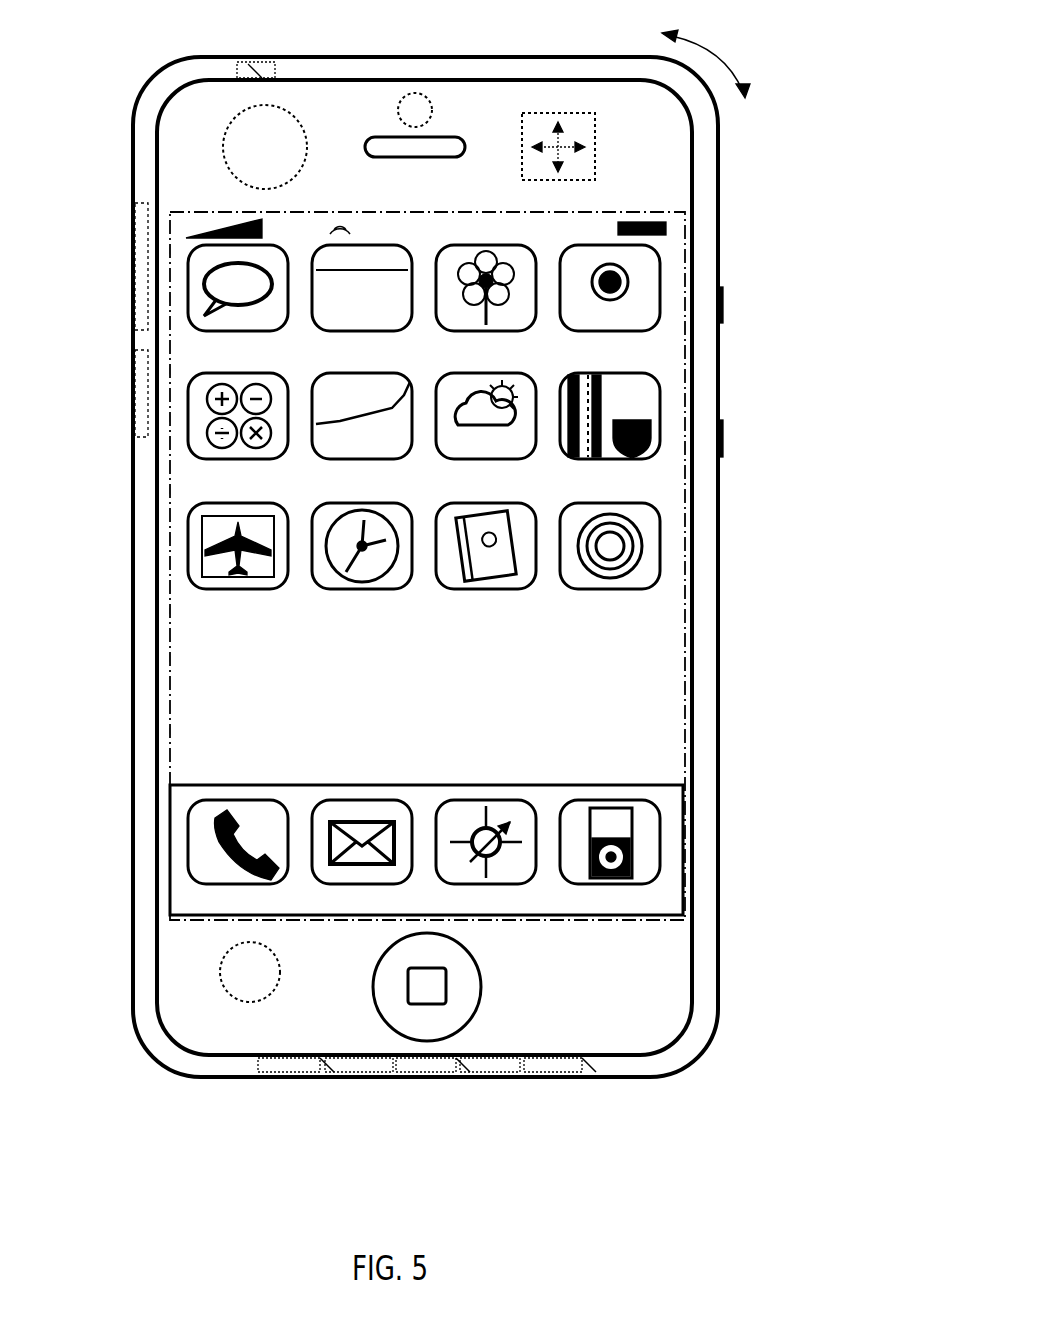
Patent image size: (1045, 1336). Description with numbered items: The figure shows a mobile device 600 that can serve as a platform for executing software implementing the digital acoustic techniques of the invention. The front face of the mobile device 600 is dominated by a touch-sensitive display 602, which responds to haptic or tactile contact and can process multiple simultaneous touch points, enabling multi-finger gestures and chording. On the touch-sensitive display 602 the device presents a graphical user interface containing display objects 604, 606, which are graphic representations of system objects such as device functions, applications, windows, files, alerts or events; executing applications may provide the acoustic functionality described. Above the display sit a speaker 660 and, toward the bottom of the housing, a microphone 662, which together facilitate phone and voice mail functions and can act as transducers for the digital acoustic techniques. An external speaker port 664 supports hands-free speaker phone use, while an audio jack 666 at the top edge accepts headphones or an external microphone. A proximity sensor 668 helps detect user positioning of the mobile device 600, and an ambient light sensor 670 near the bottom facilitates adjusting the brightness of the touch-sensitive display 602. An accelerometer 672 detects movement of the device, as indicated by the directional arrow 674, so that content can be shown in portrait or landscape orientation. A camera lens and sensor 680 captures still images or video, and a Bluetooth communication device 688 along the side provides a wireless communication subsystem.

The mobile device 600 is at (530, 57).
The touch-sensitive display 602 is at (490, 543).
The display object 604 is at (668, 797).
The display object 606 is at (668, 255).
The speaker 660 is at (400, 157).
The microphone 662 is at (342, 1077).
The external speaker port 664 is at (578, 1077).
The audio jack 666 is at (276, 78).
The proximity sensor 668 is at (228, 165).
The ambient light sensor 670 is at (272, 992).
The accelerometer 672 is at (597, 160).
The directional arrow 674 is at (742, 75).
The camera lens and sensor 680 is at (432, 108).
The Bluetooth communication device 688 is at (135, 340).